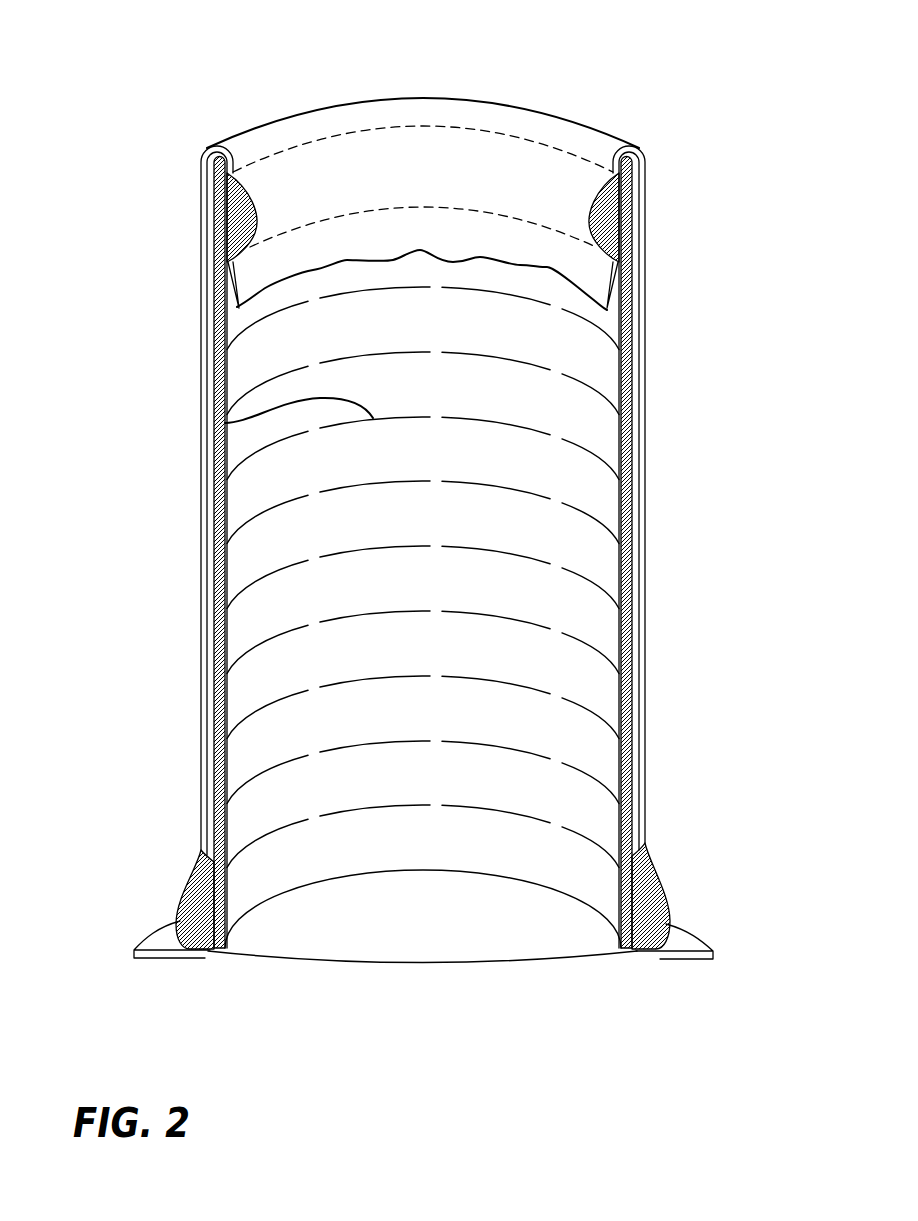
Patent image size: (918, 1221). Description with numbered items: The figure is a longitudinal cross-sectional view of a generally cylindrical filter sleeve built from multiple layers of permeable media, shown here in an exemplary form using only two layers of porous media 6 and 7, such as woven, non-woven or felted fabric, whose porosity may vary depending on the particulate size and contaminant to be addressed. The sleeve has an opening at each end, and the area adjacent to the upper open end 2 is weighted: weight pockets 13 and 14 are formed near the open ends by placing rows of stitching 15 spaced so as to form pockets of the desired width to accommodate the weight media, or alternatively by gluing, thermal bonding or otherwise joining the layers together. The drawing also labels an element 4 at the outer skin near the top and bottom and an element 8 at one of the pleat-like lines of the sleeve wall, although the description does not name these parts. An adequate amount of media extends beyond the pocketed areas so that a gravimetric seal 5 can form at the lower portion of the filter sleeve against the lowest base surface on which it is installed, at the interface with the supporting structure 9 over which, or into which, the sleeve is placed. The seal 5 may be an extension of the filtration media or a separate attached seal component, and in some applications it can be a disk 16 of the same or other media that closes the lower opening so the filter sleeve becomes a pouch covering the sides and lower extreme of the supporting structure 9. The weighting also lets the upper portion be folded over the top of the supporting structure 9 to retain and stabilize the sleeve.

The open end 2 is at (429, 222).
The outer film skin 4 is at (307, 177).
The seal 5 is at (663, 957).
The porous media 6 is at (648, 264).
The porous media 7 is at (640, 437).
The pleat 8 is at (225, 423).
The supporting structure 9 is at (213, 590).
The weight pocket 13 is at (232, 227).
The weight pocket 14 is at (657, 903).
The rows of stitching 15 is at (528, 217).
The disk 16 is at (430, 917).